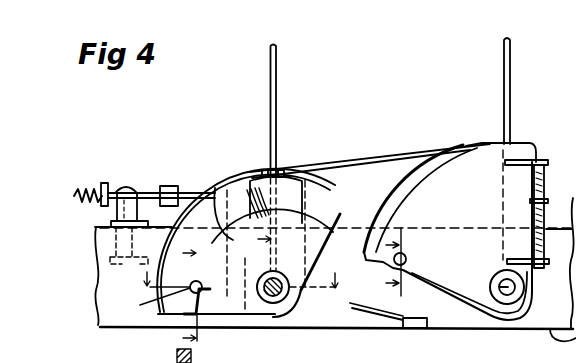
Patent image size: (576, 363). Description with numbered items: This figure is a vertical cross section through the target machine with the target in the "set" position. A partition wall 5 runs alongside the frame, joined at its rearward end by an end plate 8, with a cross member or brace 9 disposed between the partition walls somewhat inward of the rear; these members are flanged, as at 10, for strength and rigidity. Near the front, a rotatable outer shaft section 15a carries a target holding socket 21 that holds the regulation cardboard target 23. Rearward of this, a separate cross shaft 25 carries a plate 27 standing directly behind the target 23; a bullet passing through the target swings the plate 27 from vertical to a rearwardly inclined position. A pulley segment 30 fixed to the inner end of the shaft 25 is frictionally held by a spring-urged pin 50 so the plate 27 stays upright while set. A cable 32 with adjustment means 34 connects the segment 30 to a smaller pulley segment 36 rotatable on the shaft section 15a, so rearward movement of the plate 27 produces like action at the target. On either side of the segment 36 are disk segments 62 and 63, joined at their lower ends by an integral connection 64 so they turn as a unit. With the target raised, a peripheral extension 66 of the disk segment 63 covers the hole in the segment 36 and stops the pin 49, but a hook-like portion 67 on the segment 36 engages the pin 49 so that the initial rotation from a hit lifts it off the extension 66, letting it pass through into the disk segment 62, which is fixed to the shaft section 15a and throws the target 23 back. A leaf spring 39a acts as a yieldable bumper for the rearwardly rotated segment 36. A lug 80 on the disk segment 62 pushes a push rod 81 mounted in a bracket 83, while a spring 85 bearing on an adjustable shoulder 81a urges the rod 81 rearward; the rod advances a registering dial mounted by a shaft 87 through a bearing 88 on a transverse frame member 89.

The partition wall 5 is at (182, 289).
The end plate 8 is at (397, 261).
The cross member or brace 9 is at (238, 284).
The flange 10 is at (96, 242).
The outer shaft section 15a is at (302, 311).
The target holding socket 21 is at (322, 257).
The target 23 is at (281, 70).
The cross shaft 25 is at (494, 283).
The plate 27 is at (503, 58).
The pulley segment 30 is at (472, 150).
The cable 32 is at (412, 133).
The adjustment means 34 is at (550, 200).
The pulley segment 36 is at (301, 171).
The leaf spring 39a is at (383, 318).
The pin 49 is at (152, 299).
The pin 50 is at (408, 257).
The disk segment 62 is at (318, 208).
The disk segment 63 is at (340, 216).
The integral connection 64 is at (266, 274).
The peripheral extension 66 is at (201, 282).
The hook-like portion 67 is at (206, 297).
The lug 80 is at (250, 172).
The push rod 81 is at (170, 192).
The adjustable shoulder 81a is at (130, 184).
The bracket 83 is at (283, 247).
The spring 85 is at (90, 188).
The shaft 87 is at (114, 216).
The bearing 88 is at (166, 187).
The transverse frame member 89 is at (97, 250).